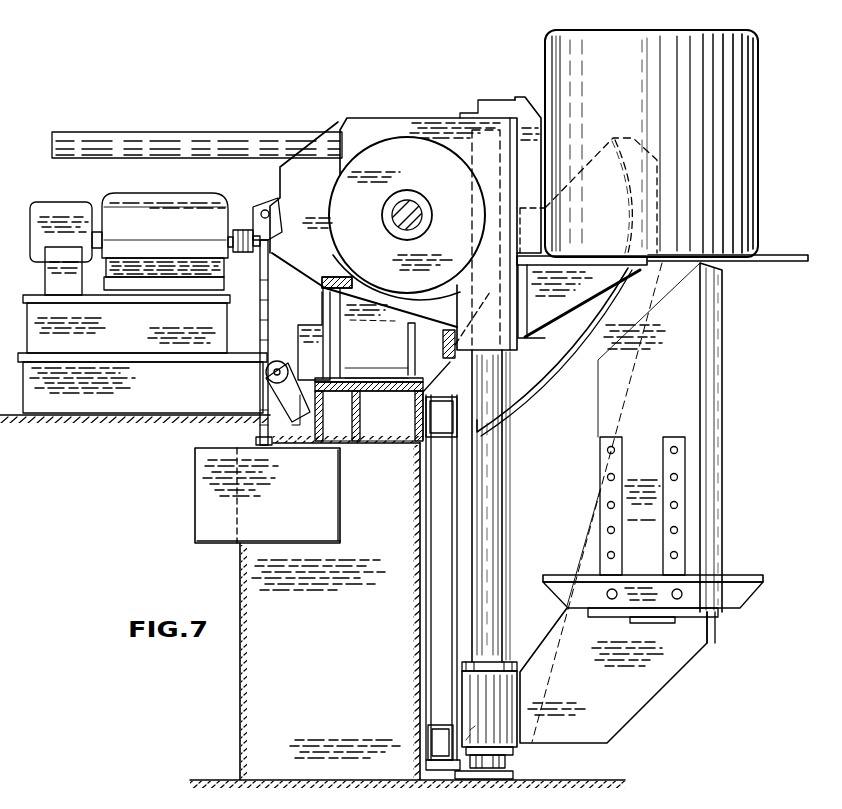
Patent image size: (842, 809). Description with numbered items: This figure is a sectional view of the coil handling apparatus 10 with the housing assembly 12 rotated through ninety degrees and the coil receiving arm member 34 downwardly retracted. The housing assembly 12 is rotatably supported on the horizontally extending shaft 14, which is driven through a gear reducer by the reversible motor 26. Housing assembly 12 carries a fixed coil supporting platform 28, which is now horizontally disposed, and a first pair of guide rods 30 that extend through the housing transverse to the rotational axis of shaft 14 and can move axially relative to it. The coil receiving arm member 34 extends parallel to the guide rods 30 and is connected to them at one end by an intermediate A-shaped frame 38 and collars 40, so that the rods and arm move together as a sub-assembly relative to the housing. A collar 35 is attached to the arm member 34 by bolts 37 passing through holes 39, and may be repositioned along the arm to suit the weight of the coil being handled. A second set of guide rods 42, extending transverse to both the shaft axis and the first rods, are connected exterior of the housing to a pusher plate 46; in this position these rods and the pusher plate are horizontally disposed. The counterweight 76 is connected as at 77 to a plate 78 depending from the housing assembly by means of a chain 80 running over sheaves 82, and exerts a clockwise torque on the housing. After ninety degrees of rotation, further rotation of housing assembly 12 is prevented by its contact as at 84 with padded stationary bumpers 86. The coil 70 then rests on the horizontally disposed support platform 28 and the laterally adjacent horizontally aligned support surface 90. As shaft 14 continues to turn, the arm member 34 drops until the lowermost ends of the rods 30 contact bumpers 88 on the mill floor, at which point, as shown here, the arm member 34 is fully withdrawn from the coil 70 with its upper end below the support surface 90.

The coil handling apparatus 10 is at (451, 86).
The housing assembly 12 is at (384, 128).
The shaft 14 is at (412, 206).
The reversible motor 26 is at (156, 210).
The coil supporting platform 28 is at (555, 311).
The guide rods 30 is at (503, 500).
The coil receiving arm member 34 is at (714, 424).
The collar 35 is at (750, 596).
The bolts 37 is at (683, 594).
The A-shaped frame 38 is at (653, 683).
The holes 39 is at (670, 555).
The collars 40 is at (517, 723).
The guide rods 42 is at (102, 140).
The pusher plate 46 is at (521, 103).
The coil 70 is at (748, 80).
The counterweight 76 is at (205, 503).
The connection 77 is at (272, 212).
The plate 78 is at (340, 350).
The chain 80 is at (262, 398).
The sheaves 82 is at (262, 370).
The contact point 84 is at (463, 338).
The padded stationary bumpers 86 is at (450, 362).
The bumpers 88 is at (513, 763).
The support surface 90 is at (790, 262).